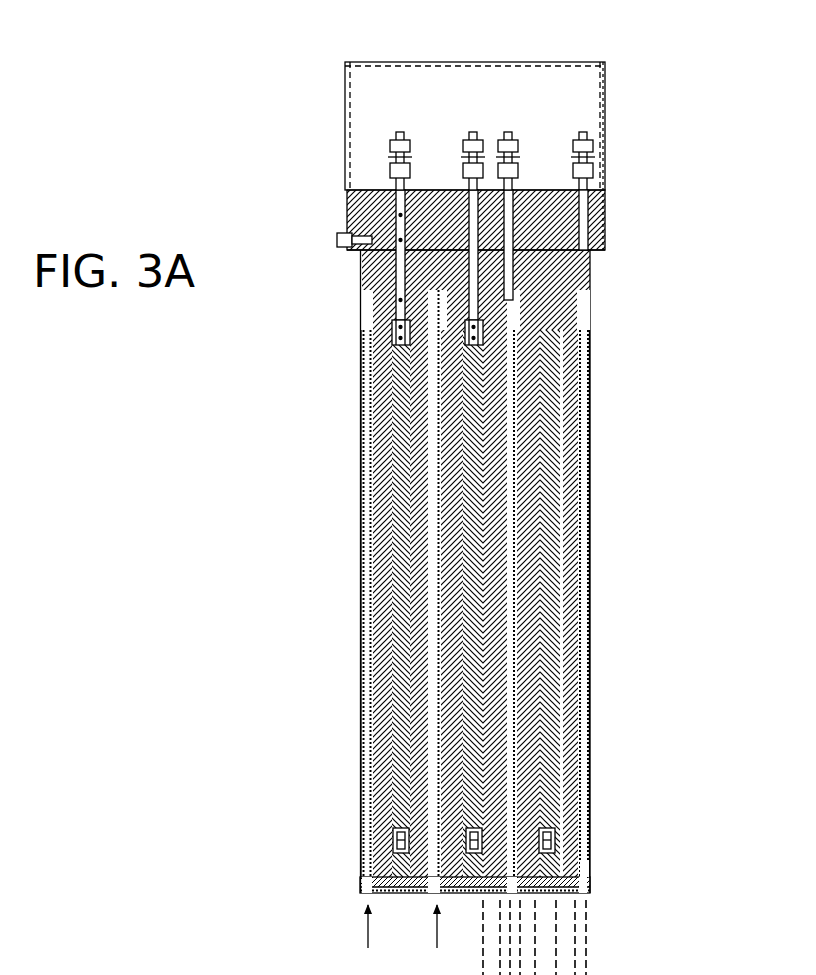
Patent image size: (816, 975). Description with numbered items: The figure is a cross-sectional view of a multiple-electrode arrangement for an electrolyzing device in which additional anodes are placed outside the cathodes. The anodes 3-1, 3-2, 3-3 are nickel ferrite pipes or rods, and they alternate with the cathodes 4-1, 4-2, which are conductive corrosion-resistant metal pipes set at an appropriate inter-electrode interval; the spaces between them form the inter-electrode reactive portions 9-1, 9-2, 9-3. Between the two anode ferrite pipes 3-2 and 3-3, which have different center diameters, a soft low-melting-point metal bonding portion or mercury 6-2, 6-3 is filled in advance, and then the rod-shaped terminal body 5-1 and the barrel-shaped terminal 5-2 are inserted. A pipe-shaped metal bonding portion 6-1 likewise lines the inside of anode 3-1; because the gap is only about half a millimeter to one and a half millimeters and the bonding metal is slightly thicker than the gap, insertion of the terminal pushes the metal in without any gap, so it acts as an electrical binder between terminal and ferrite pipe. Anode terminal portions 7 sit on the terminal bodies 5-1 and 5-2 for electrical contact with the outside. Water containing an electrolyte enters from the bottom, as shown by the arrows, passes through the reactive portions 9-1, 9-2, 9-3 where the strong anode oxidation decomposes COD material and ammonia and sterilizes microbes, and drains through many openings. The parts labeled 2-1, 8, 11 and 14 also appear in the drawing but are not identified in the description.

The bottom plate 2-1 is at (590, 773).
The anode 3-1 is at (545, 335).
The anode 3-2 is at (405, 540).
The anode 3-3 is at (365, 643).
The cathode 4-1 is at (357, 730).
The cathode 4-2 is at (367, 697).
The rod-shaped terminal body 5-1 is at (487, 450).
The barrel-shaped terminal 5-2 is at (390, 440).
The metal bonding portion with low melting point 6-1 is at (385, 413).
The metal bonding portion with low melting point 6-2 is at (385, 598).
The metal bonding portion with low melting point 6-3 is at (400, 487).
The anode terminal portion 7 is at (405, 132).
The fastening bolt 8 is at (512, 132).
The inter-electrode reactive portion 9-1 is at (485, 832).
The inter-electrode reactive portion 9-2 is at (393, 780).
The inter-electrode reactive portion 9-3 is at (470, 352).
The gasket 11 is at (360, 272).
The tie rod 14 is at (592, 210).